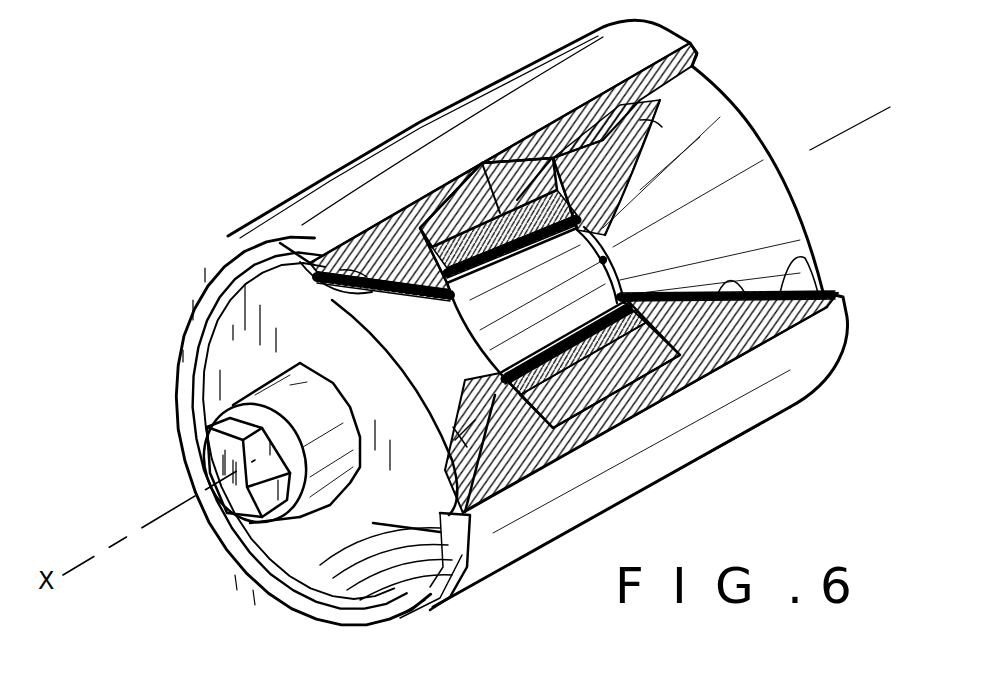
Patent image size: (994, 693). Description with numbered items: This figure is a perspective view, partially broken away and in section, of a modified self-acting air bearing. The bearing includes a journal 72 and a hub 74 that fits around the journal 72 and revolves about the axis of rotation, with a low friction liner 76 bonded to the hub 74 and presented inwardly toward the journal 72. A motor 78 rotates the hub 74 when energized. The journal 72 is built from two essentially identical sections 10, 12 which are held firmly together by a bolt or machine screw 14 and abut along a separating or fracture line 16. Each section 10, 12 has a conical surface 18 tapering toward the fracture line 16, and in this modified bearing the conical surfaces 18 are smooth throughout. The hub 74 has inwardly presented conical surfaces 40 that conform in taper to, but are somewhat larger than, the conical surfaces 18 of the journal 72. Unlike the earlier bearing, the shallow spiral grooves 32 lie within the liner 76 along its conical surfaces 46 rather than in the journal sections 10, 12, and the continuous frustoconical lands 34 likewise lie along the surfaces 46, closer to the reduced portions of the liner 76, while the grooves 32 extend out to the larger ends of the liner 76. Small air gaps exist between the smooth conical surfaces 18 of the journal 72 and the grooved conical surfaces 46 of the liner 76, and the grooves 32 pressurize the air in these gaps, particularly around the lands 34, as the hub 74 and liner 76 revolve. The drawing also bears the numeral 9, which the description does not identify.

The central shaft 9 is at (470, 410).
The journal section 10 is at (807, 213).
The journal section 12 is at (200, 370).
The bolt or machine screw 14 is at (217, 460).
The separating or fracture line 16 is at (612, 232).
The conical surface 18 is at (767, 195).
The spiral grooves 32 is at (350, 590).
The frustoconical lands 34 is at (290, 522).
The conical surfaces 40 is at (330, 287).
The surfaces of the liner 46 is at (783, 297).
The journal 72 is at (168, 317).
The hub 74 is at (790, 380).
The liner 76 is at (367, 277).
The motor 78 is at (497, 235).